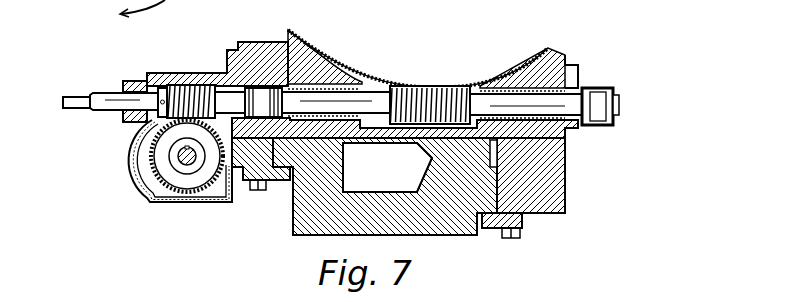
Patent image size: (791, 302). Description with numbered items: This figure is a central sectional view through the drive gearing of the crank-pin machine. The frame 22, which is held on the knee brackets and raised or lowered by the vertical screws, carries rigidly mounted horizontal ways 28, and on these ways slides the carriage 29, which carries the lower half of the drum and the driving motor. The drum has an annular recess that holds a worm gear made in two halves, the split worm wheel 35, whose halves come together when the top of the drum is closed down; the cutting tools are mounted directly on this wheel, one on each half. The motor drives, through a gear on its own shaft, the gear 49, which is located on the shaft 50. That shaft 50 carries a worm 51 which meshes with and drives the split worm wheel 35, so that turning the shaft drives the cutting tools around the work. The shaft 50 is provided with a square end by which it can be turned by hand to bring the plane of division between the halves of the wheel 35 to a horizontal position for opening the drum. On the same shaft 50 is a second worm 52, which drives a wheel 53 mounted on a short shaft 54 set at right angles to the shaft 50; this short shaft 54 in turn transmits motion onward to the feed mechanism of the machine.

The frame 22 is at (457, 225).
The horizontal ways 28 is at (460, 140).
The carriage 29 is at (550, 166).
The split worm wheel 35 is at (541, 49).
The gear 49 is at (602, 97).
The shaft 50 is at (372, 102).
The worm 51 is at (432, 90).
The worm 52 is at (189, 86).
The wheel 53 is at (188, 190).
The short shaft 54 is at (183, 150).